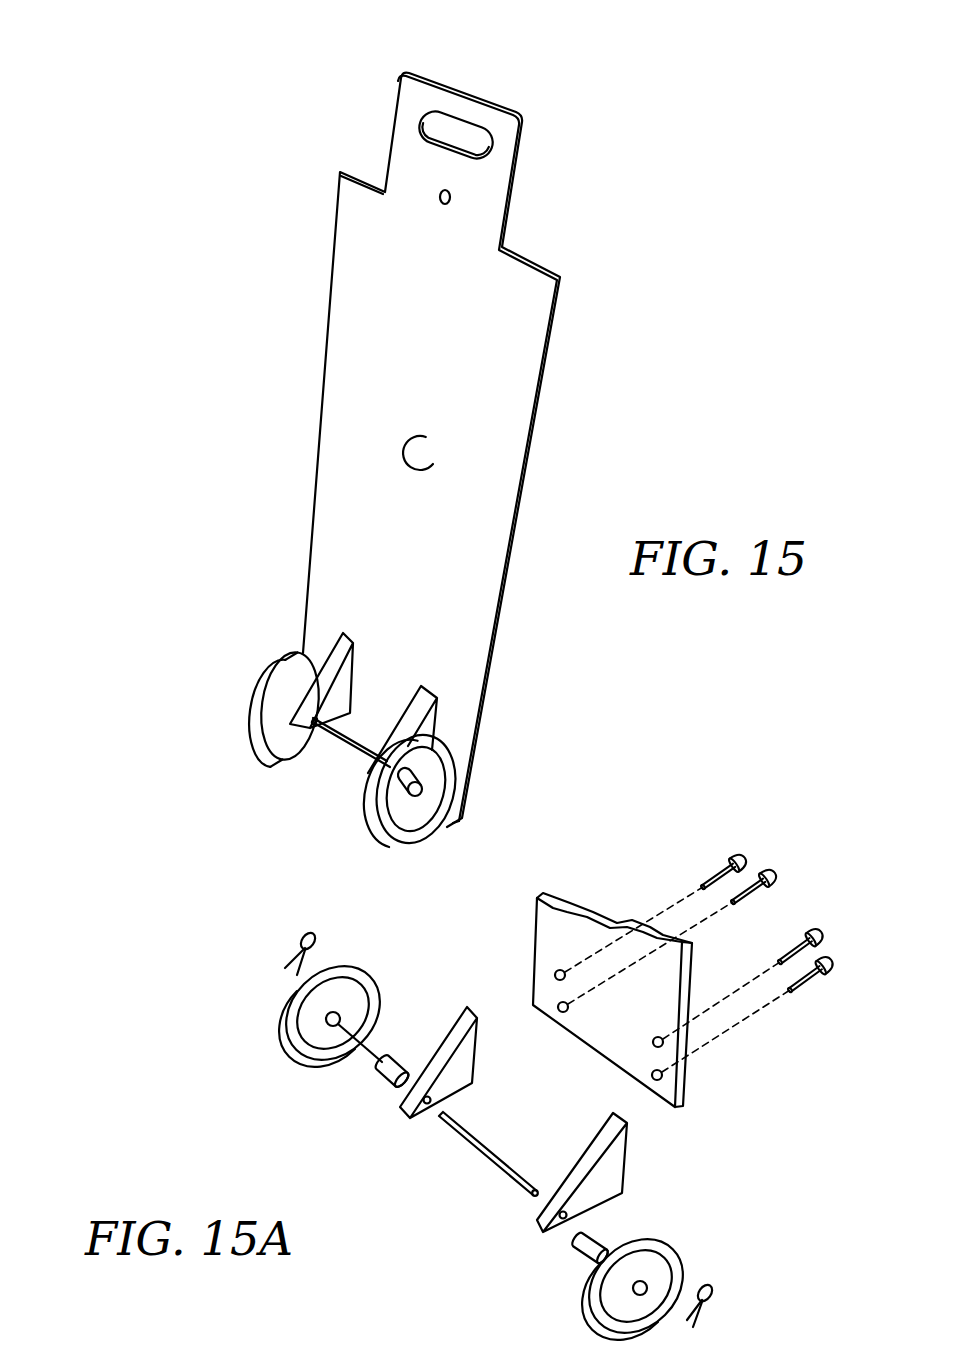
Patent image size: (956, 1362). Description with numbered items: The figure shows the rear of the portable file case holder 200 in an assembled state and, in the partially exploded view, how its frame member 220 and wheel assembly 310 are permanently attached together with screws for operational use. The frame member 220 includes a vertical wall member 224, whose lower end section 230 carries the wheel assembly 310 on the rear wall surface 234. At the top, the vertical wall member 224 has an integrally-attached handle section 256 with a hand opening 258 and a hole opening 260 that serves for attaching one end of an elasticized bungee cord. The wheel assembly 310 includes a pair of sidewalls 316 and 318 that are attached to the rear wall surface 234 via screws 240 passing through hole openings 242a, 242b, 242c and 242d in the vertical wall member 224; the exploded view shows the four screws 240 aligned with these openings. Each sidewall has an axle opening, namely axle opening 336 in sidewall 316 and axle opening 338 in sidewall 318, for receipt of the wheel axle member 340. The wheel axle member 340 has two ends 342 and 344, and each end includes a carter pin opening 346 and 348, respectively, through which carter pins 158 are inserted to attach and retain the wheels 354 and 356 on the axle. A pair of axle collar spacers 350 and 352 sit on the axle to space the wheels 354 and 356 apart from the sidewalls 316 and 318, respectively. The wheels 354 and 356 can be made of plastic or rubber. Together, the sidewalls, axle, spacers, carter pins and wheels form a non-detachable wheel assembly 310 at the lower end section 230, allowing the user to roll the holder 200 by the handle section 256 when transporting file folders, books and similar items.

In FIG. 15, the portable file case holder 200 is at (258, 53).
In FIG. 15, the frame member 220 is at (552, 220).
In FIG. 15, the vertical wall member 224 is at (545, 397).
In FIG. 15A, the vertical wall member 224 is at (685, 1098).
In FIG. 15, the lower end section 230 is at (467, 692).
In FIG. 15A, the lower end section 230 is at (670, 1087).
In FIG. 15, the rear wall surface 234 is at (428, 433).
In FIG. 15, the handle section 256 is at (465, 87).
In FIG. 15, the hand opening 258 is at (457, 127).
In FIG. 15, the hole opening 260 is at (443, 203).
In FIG. 15A, the screws 240 is at (737, 898).
In FIG. 15A, the hole opening 242a is at (558, 970).
In FIG. 15A, the hole opening 242b is at (561, 1012).
In FIG. 15A, the hole opening 242c is at (656, 1038).
In FIG. 15A, the hole opening 242d is at (653, 1072).
In FIG. 15, the wheel assembly 310 is at (243, 733).
In FIG. 15A, the wheel assembly 310 is at (473, 1178).
In FIG. 15, the sidewall 316 is at (350, 637).
In FIG. 15A, the sidewall 316 is at (467, 1007).
In FIG. 15, the sidewall 318 is at (437, 700).
In FIG. 15A, the sidewall 318 is at (593, 1143).
In FIG. 15, the axle opening 336 is at (347, 720).
In FIG. 15A, the axle opening 336 is at (428, 1104).
In FIG. 15, the axle opening 338 is at (387, 752).
In FIG. 15A, the axle opening 338 is at (564, 1217).
In FIG. 15, the wheel axle member 340 is at (360, 757).
In FIG. 15A, the wheel axle member 340 is at (495, 1170).
In FIG. 15A, the end 342 is at (470, 1138).
In FIG. 15A, the end 344 is at (495, 1167).
In FIG. 15A, the carter pin opening 346 is at (447, 1117).
In FIG. 15, the carter pin opening 348 is at (414, 773).
In FIG. 15A, the carter pin opening 348 is at (532, 1192).
In FIG. 15A, the axle collar spacer 350 is at (393, 1063).
In FIG. 15A, the axle collar spacer 352 is at (594, 1242).
In FIG. 15, the wheel 354 is at (253, 738).
In FIG. 15A, the wheel 354 is at (288, 1038).
In FIG. 15, the wheel 356 is at (373, 823).
In FIG. 15A, the wheel 356 is at (665, 1247).
In FIG. 15, the carter pin 158 is at (452, 832).
In FIG. 15A, the carter pin 158 is at (300, 942).